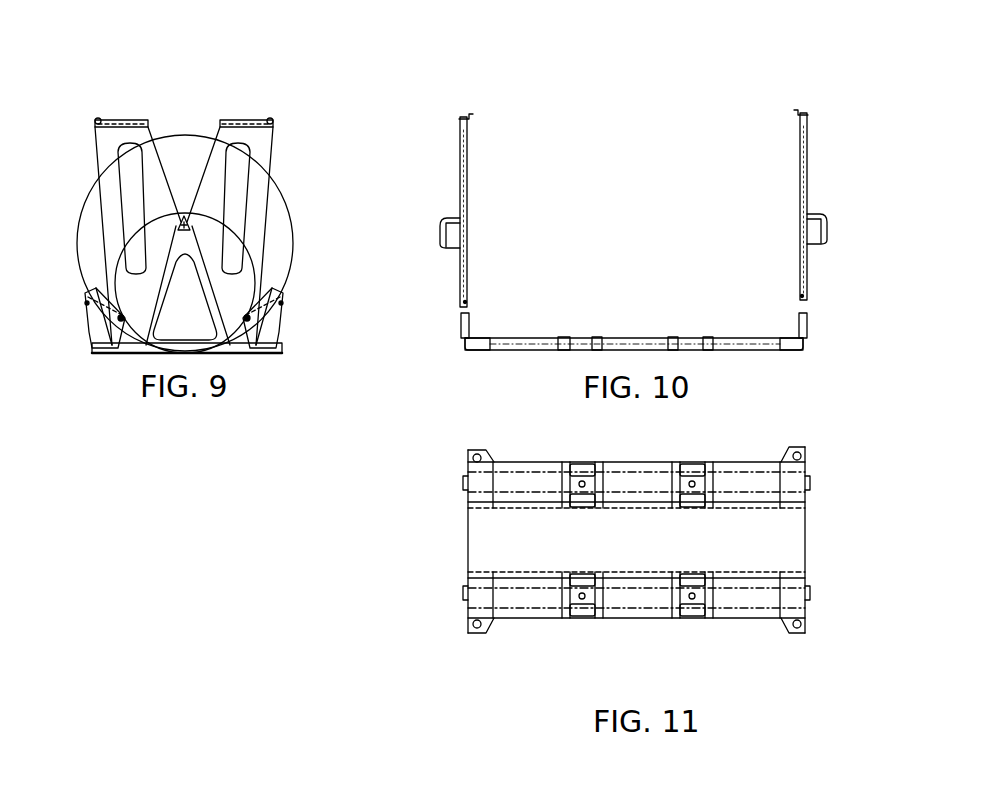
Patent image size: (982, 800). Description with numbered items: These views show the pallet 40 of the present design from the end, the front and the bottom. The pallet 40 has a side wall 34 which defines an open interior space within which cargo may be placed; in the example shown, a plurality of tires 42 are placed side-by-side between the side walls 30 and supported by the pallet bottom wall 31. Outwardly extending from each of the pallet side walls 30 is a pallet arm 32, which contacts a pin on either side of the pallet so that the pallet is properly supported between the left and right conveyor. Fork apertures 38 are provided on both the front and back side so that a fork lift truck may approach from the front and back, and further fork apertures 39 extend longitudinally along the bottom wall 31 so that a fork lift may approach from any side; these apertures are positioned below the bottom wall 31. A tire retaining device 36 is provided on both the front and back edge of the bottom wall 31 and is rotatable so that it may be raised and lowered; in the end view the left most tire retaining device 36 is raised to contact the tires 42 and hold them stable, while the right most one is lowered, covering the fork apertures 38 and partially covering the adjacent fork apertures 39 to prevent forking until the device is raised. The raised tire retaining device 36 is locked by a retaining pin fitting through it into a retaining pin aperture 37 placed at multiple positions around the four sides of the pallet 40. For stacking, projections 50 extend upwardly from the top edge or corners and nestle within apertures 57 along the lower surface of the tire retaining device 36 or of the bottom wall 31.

In FIG. 10, the side wall 30 is at (467, 160).
In FIG. 11, the pallet bottom wall 31 is at (470, 544).
In FIG. 10, the pallet arm 32 is at (452, 248).
In FIG. 9, the side wall 34 is at (176, 222).
In FIG. 10, the side wall 34 is at (444, 216).
In FIG. 9, the tire retaining device 36 is at (88, 325).
In FIG. 10, the tire retaining device 36 is at (460, 335).
In FIG. 11, the tire retaining device 36 is at (486, 455).
In FIG. 10, the retaining pin aperture 37 is at (808, 300).
In FIG. 10, the fork apertures 38 is at (565, 338).
In FIG. 11, the fork apertures 38 is at (600, 462).
In FIG. 11, the fork apertures 39 is at (466, 472).
In FIG. 9, the pallet 40 is at (287, 153).
In FIG. 10, the pallet 40 is at (807, 127).
In FIG. 11, the pallet 40 is at (782, 634).
In FIG. 9, the tires 42 is at (86, 193).
In FIG. 9, the projections 50 is at (100, 120).
In FIG. 11, the apertures 57 is at (810, 630).